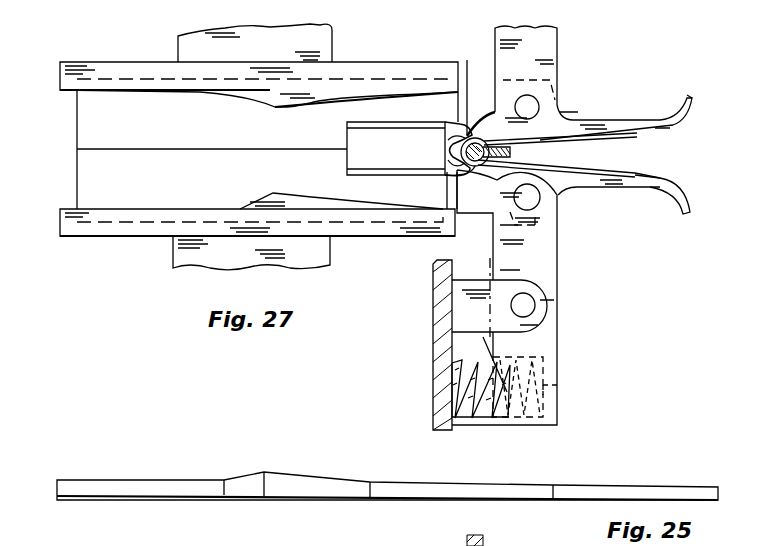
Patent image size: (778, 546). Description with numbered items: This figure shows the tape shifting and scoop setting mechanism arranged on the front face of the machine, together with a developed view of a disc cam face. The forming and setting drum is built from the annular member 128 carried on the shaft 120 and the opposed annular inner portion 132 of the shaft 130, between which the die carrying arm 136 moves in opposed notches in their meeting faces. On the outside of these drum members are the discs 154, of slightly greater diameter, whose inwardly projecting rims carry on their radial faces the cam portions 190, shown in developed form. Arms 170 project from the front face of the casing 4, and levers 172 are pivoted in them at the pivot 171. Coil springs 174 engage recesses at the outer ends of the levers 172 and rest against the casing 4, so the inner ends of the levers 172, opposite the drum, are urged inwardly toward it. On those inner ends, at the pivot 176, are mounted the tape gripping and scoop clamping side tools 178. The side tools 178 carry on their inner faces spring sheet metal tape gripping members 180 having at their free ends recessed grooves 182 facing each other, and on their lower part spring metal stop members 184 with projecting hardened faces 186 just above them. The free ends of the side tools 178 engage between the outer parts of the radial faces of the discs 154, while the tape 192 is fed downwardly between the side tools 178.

In FIG. 27, the casing 4 is at (433, 315).
In FIG. 27, the shaft 120 is at (183, 258).
In FIG. 27, the annular member 128 is at (90, 192).
In FIG. 27, the shaft 130 is at (312, 40).
In FIG. 27, the annular inner portion 132 is at (132, 105).
In FIG. 27, the die carrying arm 136 is at (398, 165).
In FIG. 27, the discs 154 is at (352, 75).
In FIG. 27, the arms 170 is at (463, 290).
In FIG. 27, the pivot 171 is at (527, 310).
In FIG. 27, the levers 172 is at (553, 55).
In FIG. 27, the coil springs 174 is at (480, 407).
In FIG. 27, the pivot 176 is at (533, 202).
In FIG. 27, the side tools 178 is at (593, 123).
In FIG. 27, the tape gripping members 180 is at (575, 168).
In FIG. 27, the recessed grooves 182 is at (466, 127).
In FIG. 27, the stop members 184 is at (440, 178).
In FIG. 27, the hardened faces 186 is at (448, 128).
In FIG. 27, the cam portions 190 is at (292, 200).
In FIG. 25, the cam portions 190 is at (327, 479).
In FIG. 27, the tape 192 is at (510, 153).